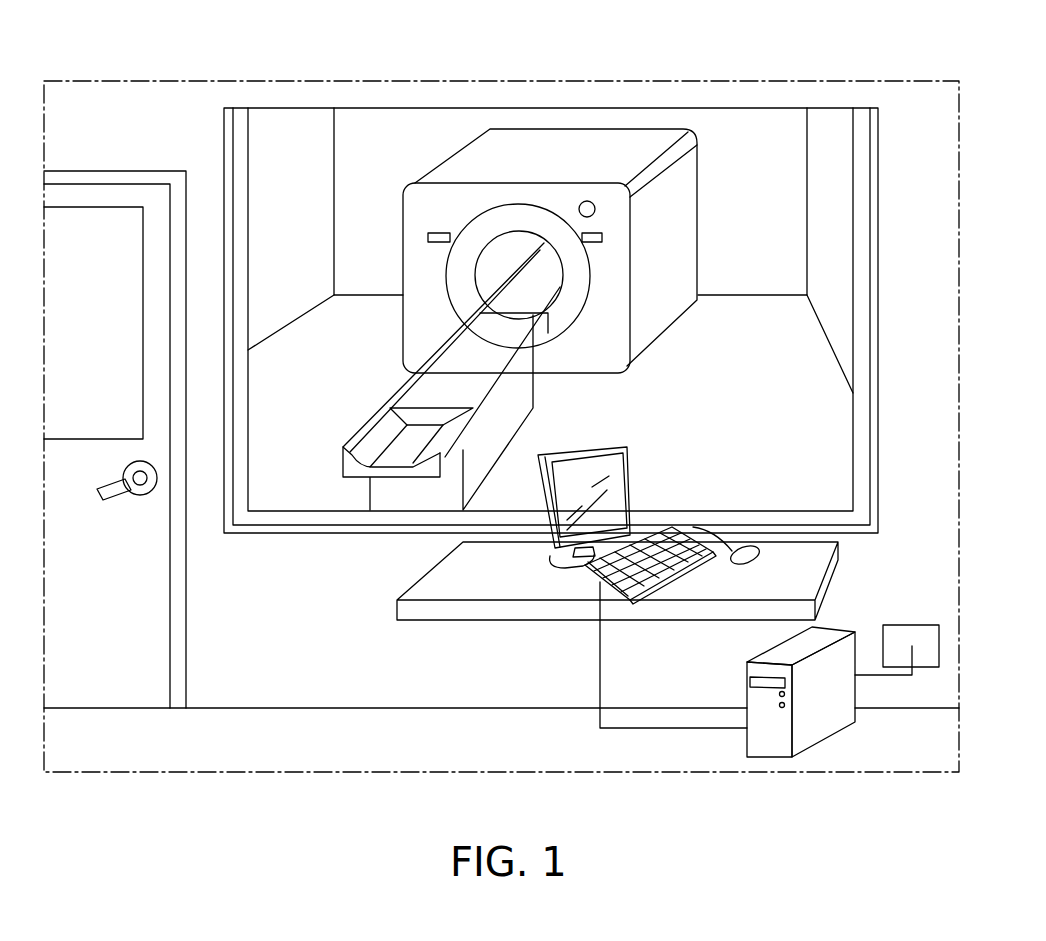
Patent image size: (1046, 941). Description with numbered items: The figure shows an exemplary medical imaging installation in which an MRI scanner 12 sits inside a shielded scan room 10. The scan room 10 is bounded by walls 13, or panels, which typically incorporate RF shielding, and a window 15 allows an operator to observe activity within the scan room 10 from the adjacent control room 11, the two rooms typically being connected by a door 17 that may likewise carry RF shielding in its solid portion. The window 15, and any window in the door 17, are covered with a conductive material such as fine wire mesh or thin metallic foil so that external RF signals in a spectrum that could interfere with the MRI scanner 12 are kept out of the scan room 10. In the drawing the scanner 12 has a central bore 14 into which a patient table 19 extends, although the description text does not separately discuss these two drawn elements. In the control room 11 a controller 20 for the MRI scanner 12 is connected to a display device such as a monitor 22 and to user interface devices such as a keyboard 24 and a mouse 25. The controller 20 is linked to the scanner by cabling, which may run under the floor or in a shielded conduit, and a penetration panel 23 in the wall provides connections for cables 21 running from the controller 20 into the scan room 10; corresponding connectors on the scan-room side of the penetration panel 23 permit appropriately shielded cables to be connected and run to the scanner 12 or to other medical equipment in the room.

The scan room 10 is at (272, 125).
The control room 11 is at (295, 754).
The MRI scanner 12 is at (662, 310).
The walls 13 is at (296, 297).
The scanner bore 14 is at (483, 283).
The window 15 is at (870, 443).
The door 17 is at (121, 592).
The patient table 19 is at (486, 373).
The controller 20 is at (827, 726).
The cables 21 is at (882, 677).
The monitor 22 is at (546, 553).
The penetration panel 23 is at (906, 625).
The keyboard 24 is at (680, 567).
The mouse 25 is at (762, 552).